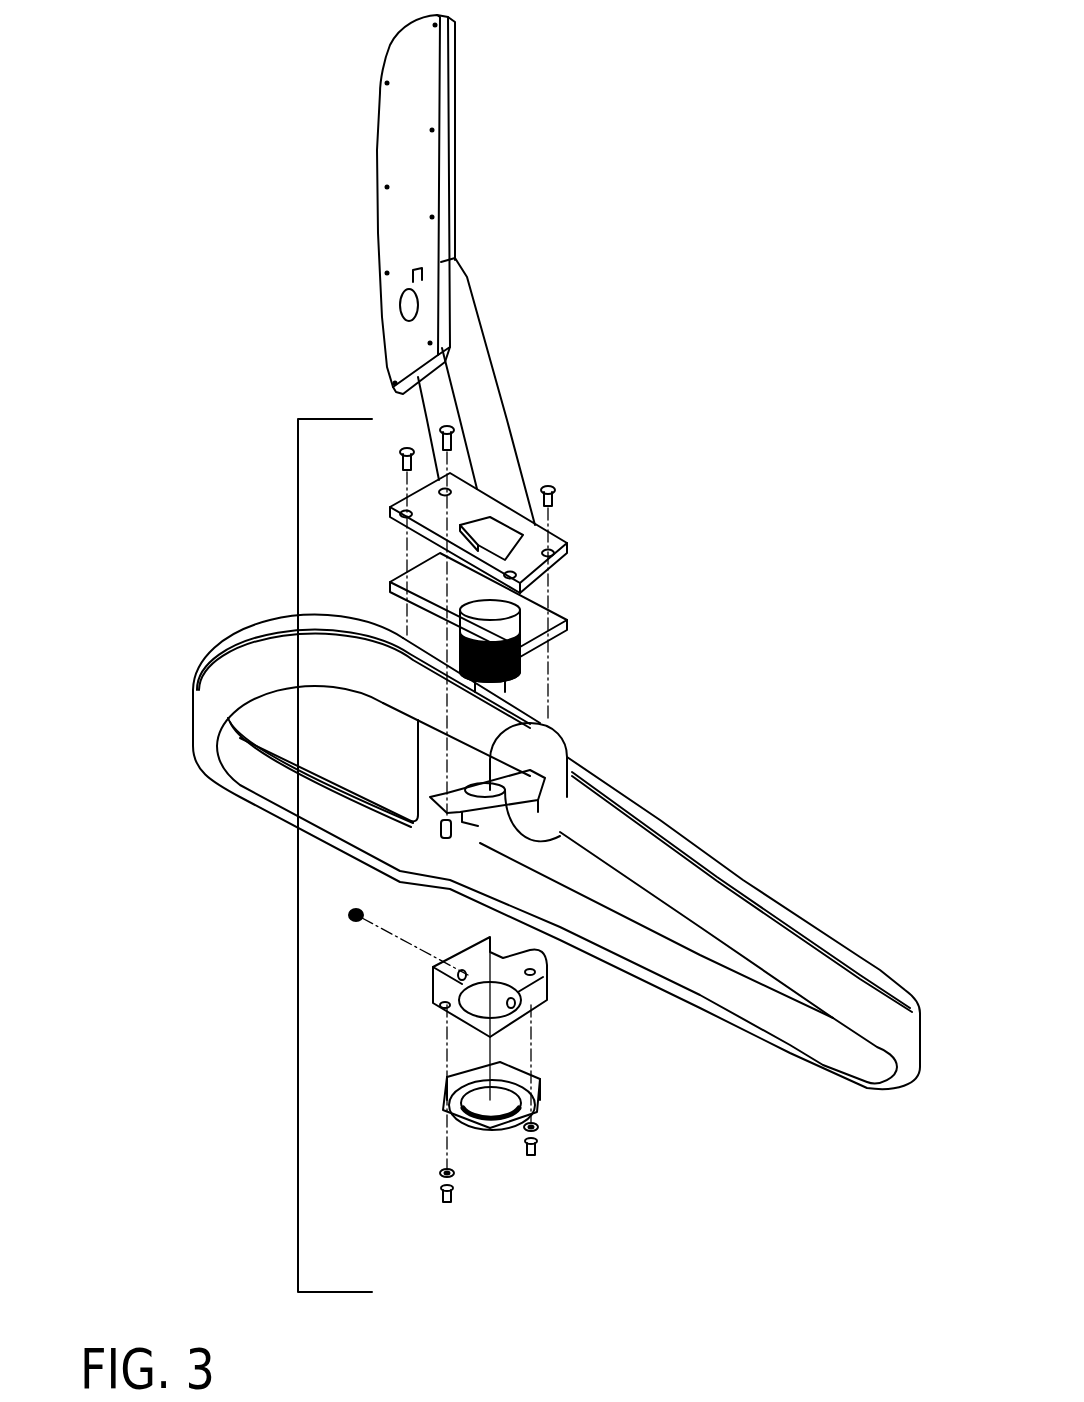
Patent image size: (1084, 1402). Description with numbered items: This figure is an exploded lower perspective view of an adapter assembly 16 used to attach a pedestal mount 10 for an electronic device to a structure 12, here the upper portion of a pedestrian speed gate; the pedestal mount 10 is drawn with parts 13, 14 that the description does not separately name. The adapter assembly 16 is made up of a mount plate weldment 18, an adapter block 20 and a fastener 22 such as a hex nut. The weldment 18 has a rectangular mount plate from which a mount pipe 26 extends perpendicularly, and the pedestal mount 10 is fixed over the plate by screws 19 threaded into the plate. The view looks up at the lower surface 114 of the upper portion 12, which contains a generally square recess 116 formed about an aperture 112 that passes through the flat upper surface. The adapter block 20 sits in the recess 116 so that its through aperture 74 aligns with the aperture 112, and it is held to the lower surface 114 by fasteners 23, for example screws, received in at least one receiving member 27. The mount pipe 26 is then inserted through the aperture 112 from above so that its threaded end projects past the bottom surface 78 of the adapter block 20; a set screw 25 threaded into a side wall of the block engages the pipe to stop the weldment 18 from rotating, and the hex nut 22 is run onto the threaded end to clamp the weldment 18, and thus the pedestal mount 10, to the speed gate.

The pedestal mount 10 is at (468, 132).
The upper portion of the speed gate 12 is at (688, 836).
The neck 13 is at (468, 348).
The mounting plate 14 is at (393, 133).
The adapter assembly 16 is at (292, 932).
The mount plate weldment 18 is at (572, 605).
The screws 19 is at (553, 470).
The adapter block 20 is at (556, 990).
The hex nut 22 is at (440, 1090).
The fastener 23 is at (445, 1195).
The set screw 25 is at (352, 922).
The mount pipe 26 is at (500, 620).
The receiving member 27 is at (440, 830).
The aperture 74 is at (500, 1013).
The bottom surface 78 is at (443, 1002).
The aperture 112 is at (520, 723).
The lower surface 114 is at (663, 912).
The recess 116 is at (548, 843).